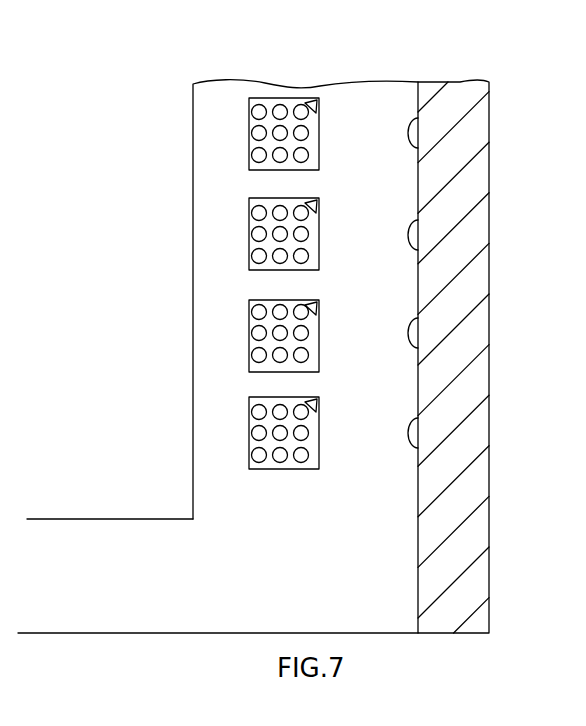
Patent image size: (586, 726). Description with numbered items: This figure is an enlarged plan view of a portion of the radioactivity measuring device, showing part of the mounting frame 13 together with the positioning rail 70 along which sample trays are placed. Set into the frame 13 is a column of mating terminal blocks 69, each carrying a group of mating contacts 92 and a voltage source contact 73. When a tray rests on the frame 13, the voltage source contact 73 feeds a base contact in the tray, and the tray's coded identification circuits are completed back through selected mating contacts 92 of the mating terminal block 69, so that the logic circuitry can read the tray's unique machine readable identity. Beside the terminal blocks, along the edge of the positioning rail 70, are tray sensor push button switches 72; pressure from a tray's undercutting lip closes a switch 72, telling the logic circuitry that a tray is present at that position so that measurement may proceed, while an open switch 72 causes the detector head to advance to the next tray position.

The frame 13 is at (168, 603).
The mating terminal block 69 is at (288, 225).
The positioning rail 70 is at (489, 210).
The push button switch 72 is at (409, 333).
The voltage source contact 73 is at (313, 203).
The mating contact 92 is at (252, 128).